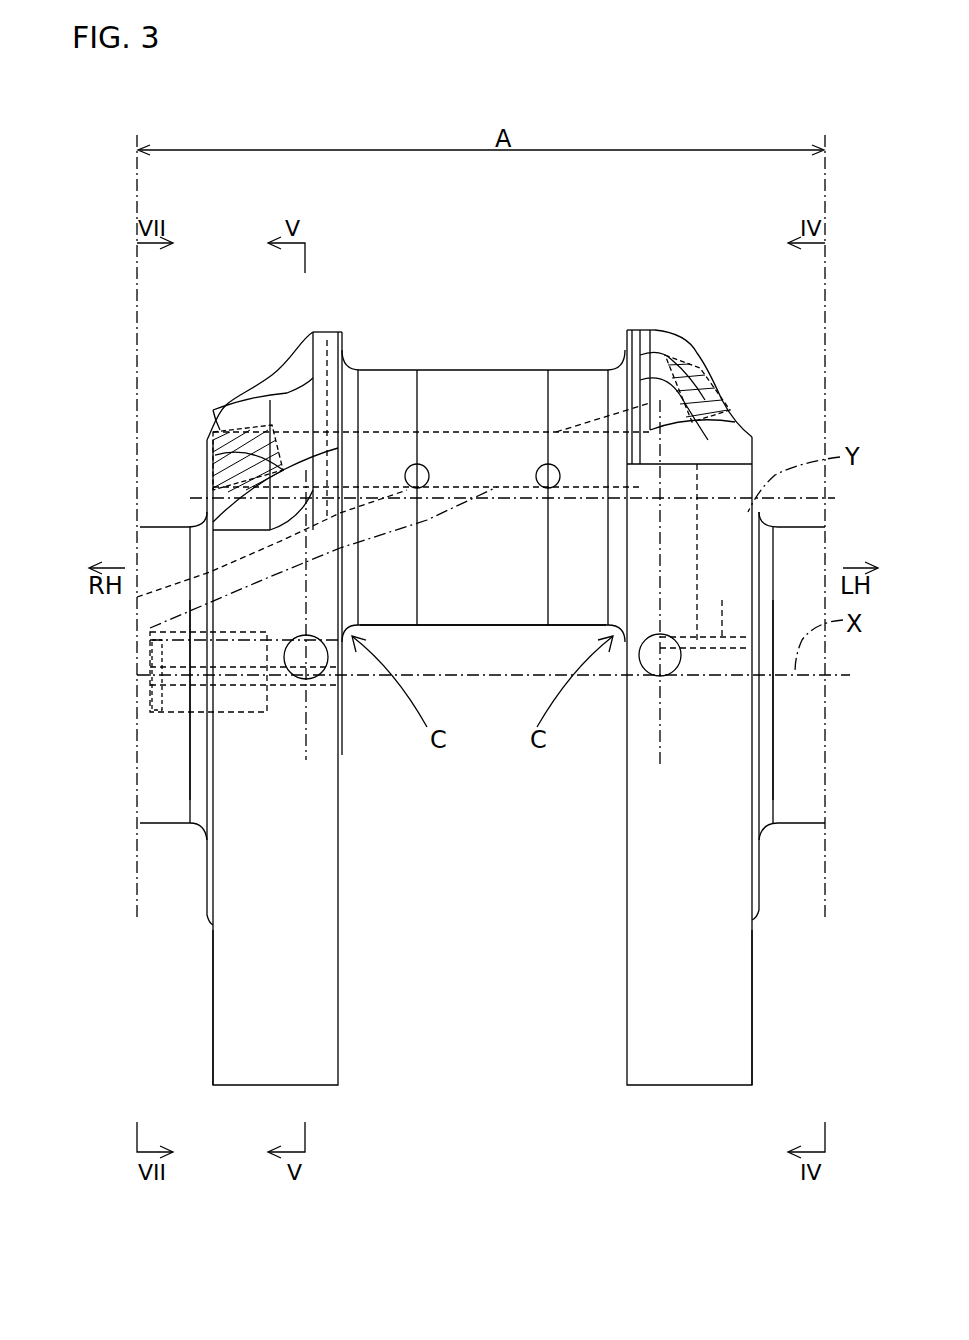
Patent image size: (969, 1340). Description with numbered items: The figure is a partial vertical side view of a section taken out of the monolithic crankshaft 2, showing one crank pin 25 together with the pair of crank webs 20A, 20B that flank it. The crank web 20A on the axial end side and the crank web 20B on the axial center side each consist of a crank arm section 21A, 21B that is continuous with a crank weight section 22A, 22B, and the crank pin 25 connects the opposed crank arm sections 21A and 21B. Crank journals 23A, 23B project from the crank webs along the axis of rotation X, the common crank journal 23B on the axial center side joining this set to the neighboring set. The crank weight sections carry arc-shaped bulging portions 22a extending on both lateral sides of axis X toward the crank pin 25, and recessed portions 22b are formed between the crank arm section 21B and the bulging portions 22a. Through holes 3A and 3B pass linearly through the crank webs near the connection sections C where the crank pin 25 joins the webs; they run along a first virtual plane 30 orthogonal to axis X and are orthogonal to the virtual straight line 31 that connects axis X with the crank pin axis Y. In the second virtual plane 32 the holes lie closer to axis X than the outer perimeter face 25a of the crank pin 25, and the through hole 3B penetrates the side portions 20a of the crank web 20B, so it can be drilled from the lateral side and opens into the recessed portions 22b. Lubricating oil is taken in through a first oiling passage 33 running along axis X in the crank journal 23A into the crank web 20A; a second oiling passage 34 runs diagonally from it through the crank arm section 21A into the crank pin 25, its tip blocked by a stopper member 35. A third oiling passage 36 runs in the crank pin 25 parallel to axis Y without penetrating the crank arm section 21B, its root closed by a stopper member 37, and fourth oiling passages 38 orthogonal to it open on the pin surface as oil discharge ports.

The crankshaft 2 is at (575, 136).
The through hole 3A is at (314, 680).
The through hole 3B is at (678, 668).
The crank web 20A is at (352, 838).
The crank web 20B is at (607, 838).
The side portions 20a is at (263, 638).
The crank arm section 21A is at (220, 400).
The crank arm section 21B is at (752, 442).
The crank weight section 22A is at (310, 1086).
The crank weight section 22B is at (682, 1086).
The bulging portions 22a is at (212, 496).
The recessed portions 22b is at (155, 700).
The crank journal 23A is at (162, 828).
The crank journal 23B is at (792, 828).
The crank pin 25 is at (445, 368).
The outer perimeter face 25a is at (438, 630).
The first virtual plane 30 is at (304, 722).
The virtual straight line 31 is at (296, 578).
The second virtual plane 32 is at (556, 652).
The first oiling passage 33 is at (162, 715).
The second oiling passage 34 is at (578, 418).
The stopper member 35 is at (665, 365).
The third oiling passage 36 is at (483, 430).
The stopper member 37 is at (262, 395).
The fourth oiling passages 38 is at (430, 476).